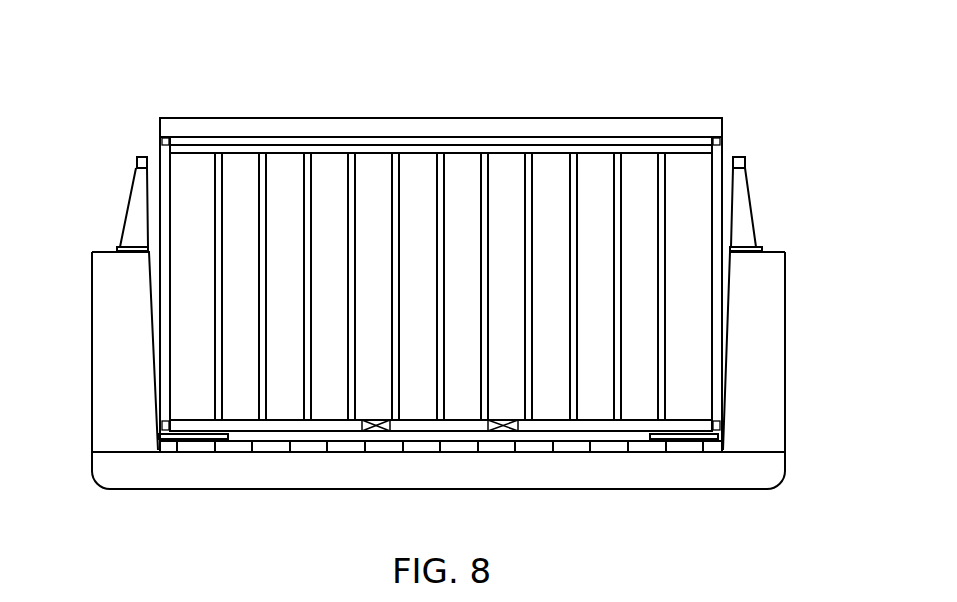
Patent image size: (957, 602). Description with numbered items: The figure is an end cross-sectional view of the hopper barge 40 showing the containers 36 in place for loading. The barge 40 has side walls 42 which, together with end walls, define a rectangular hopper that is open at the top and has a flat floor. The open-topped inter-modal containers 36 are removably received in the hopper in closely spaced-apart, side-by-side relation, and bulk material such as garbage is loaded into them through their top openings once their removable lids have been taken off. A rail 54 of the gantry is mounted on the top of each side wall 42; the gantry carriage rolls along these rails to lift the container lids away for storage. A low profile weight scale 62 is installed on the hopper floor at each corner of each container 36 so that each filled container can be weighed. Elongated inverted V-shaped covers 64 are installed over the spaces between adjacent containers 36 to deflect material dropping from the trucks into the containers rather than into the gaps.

The hopper barge 40 is at (793, 240).
The side wall 42 is at (182, 308).
The open-topped inter-modal container 36 is at (500, 183).
The inverted V-shaped cover 64 is at (367, 126).
The rail 54 is at (140, 157).
The low profile weight scale 62 is at (201, 437).